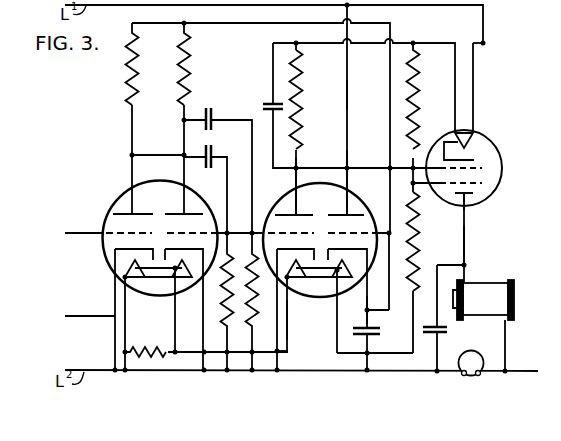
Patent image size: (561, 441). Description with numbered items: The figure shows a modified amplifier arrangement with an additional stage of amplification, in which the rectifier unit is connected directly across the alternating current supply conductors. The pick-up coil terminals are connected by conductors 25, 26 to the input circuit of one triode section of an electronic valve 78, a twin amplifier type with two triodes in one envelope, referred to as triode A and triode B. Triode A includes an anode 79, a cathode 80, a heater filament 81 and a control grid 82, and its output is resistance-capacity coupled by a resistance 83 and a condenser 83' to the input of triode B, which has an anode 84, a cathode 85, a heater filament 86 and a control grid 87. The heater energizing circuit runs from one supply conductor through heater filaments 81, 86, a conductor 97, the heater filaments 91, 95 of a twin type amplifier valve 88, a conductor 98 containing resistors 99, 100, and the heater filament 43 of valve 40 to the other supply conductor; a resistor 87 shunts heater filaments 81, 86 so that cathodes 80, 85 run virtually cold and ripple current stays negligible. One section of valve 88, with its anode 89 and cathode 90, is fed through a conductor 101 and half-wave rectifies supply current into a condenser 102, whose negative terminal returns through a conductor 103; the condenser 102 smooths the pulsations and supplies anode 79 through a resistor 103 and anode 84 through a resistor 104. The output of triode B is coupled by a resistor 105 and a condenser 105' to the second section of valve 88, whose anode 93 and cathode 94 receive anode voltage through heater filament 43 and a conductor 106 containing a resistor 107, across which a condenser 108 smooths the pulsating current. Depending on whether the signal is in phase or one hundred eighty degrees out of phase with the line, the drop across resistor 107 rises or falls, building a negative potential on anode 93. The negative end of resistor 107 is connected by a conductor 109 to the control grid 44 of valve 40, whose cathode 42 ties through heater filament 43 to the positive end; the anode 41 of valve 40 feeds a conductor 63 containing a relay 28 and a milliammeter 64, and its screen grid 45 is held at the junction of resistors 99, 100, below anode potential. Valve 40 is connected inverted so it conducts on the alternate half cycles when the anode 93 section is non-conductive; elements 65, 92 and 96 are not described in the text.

The conductor 25 is at (87, 240).
The conductor 26 is at (88, 318).
The relay 28 is at (487, 300).
The valve 40 is at (498, 196).
The anode 41 is at (466, 208).
The cathode 42 is at (473, 160).
The heater filament 43 is at (440, 142).
The control grid 44 is at (482, 170).
The screen grid 45 is at (482, 183).
The conductor 63 is at (465, 242).
The milliammeter 64 is at (474, 378).
The capacitor 65 is at (448, 330).
The electronic valve 78 is at (110, 258).
The anode 79 is at (138, 213).
The cathode 80 is at (117, 281).
The heater filament 81 is at (137, 291).
The control grid 82 is at (127, 232).
The resistance 83 is at (229, 315).
The condenser 83' is at (225, 146).
The anode 84 is at (180, 213).
The cathode 85 is at (186, 291).
The heater filament 86 is at (158, 295).
The control grid / resistor 87 is at (190, 232).
The twin type amplifier valve 88 is at (295, 213).
The anode 89 is at (348, 168).
The cathode 90 is at (320, 272).
The heater filament 91 is at (349, 280).
The anode / grid 92 is at (348, 213).
The anode 93 is at (300, 167).
The cathode 94 is at (297, 280).
The heater filament 95 is at (285, 312).
The grid 96 is at (282, 231).
The conductor 97 is at (296, 342).
The conductor 98 is at (375, 349).
The resistor 99 is at (418, 246).
The resistor 100 is at (418, 100).
The conductor 101 is at (349, 96).
The condenser 102 is at (380, 321).
The conductor / resistor 103 is at (125, 70).
The resistor 104 is at (190, 70).
The resistor 105 is at (273, 315).
The condenser 105' is at (228, 102).
The conductor 106 is at (299, 52).
The resistor 107 is at (302, 98).
The condenser 108 is at (263, 105).
The conductor 109 is at (302, 213).
The triode A is at (123, 203).
The triode B is at (217, 203).